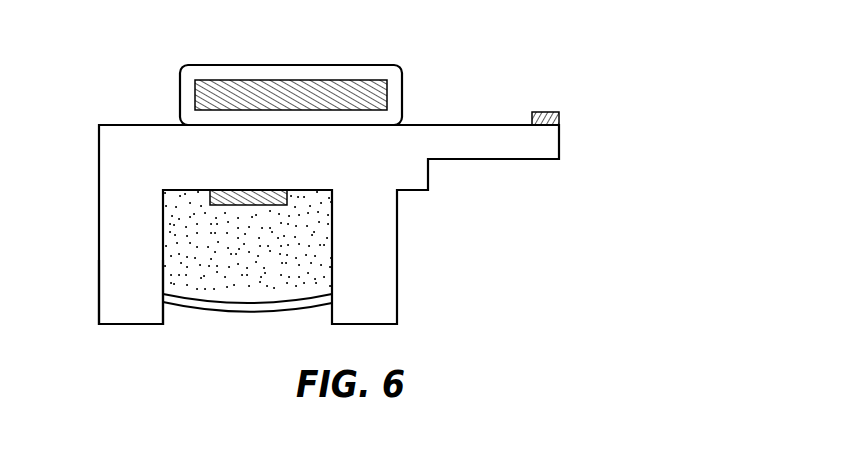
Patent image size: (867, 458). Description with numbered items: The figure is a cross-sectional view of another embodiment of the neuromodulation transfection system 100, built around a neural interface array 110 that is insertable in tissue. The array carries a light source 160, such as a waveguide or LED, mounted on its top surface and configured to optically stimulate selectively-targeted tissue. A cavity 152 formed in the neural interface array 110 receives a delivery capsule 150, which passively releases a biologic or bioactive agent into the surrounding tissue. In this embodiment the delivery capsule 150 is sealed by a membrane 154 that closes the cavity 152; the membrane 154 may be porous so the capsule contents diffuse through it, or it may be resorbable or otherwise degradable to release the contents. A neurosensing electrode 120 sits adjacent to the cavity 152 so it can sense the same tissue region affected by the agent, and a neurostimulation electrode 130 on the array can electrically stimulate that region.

The neuromodulation transfection system 100 is at (495, 201).
The neural interface array 110 is at (384, 228).
The neurosensing electrode 120 is at (228, 205).
The neurostimulation electrode 130 is at (548, 112).
The delivery capsule 150 is at (217, 258).
The cavity 152 is at (124, 327).
The membrane 154 is at (222, 325).
The light source 160 is at (255, 64).